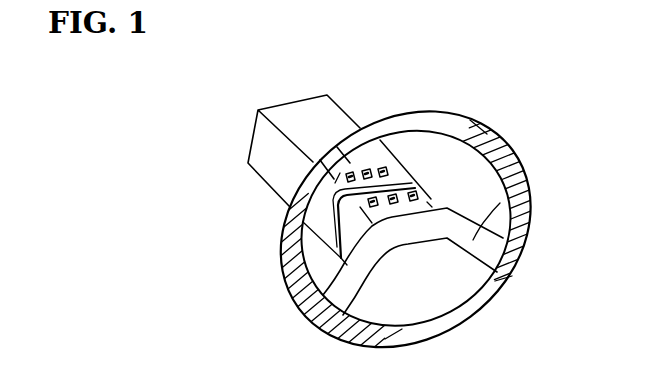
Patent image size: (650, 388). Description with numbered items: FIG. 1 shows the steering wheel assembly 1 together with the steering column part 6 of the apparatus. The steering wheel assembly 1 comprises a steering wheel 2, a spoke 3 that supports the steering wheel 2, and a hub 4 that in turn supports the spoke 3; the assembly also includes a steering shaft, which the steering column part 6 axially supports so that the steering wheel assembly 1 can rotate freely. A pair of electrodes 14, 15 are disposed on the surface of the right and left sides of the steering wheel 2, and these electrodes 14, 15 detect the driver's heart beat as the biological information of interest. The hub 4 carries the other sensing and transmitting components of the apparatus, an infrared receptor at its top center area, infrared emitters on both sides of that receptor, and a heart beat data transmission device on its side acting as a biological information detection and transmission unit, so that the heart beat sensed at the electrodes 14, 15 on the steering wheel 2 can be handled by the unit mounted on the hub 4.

The steering wheel assembly 1 is at (497, 119).
The steering wheel 2 is at (425, 116).
The spoke 3 is at (500, 203).
The hub 4 is at (433, 203).
The steering column part 6 is at (330, 120).
The electrode 14 is at (520, 237).
The electrode 15 is at (293, 237).